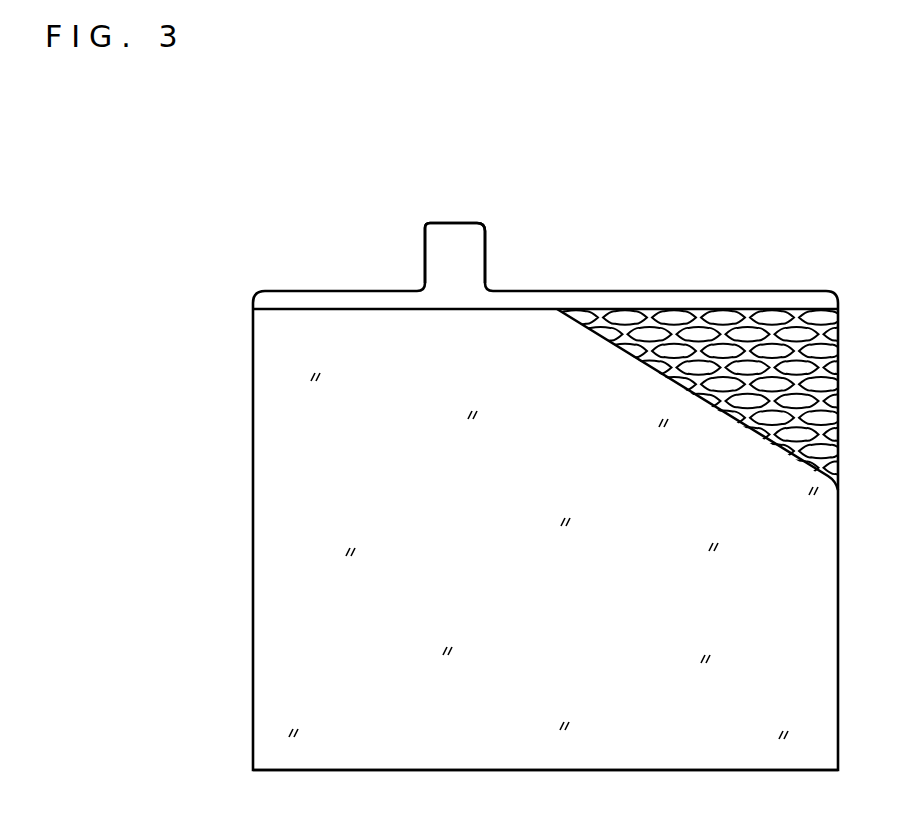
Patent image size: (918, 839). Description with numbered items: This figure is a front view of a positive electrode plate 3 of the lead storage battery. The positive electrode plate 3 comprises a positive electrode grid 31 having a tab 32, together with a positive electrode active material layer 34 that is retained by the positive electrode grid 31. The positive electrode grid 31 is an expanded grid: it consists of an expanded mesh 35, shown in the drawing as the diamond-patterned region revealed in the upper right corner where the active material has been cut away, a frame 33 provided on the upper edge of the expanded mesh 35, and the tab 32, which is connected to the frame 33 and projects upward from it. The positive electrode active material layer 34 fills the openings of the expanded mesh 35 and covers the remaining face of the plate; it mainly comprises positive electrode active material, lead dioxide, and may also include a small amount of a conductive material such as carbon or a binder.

The positive electrode plate 3 is at (656, 291).
The positive electrode grid 31 is at (763, 302).
The tab 32 is at (455, 247).
The frame 33 is at (561, 298).
The positive electrode active material layer 34 is at (650, 746).
The expanded mesh 35 is at (604, 316).